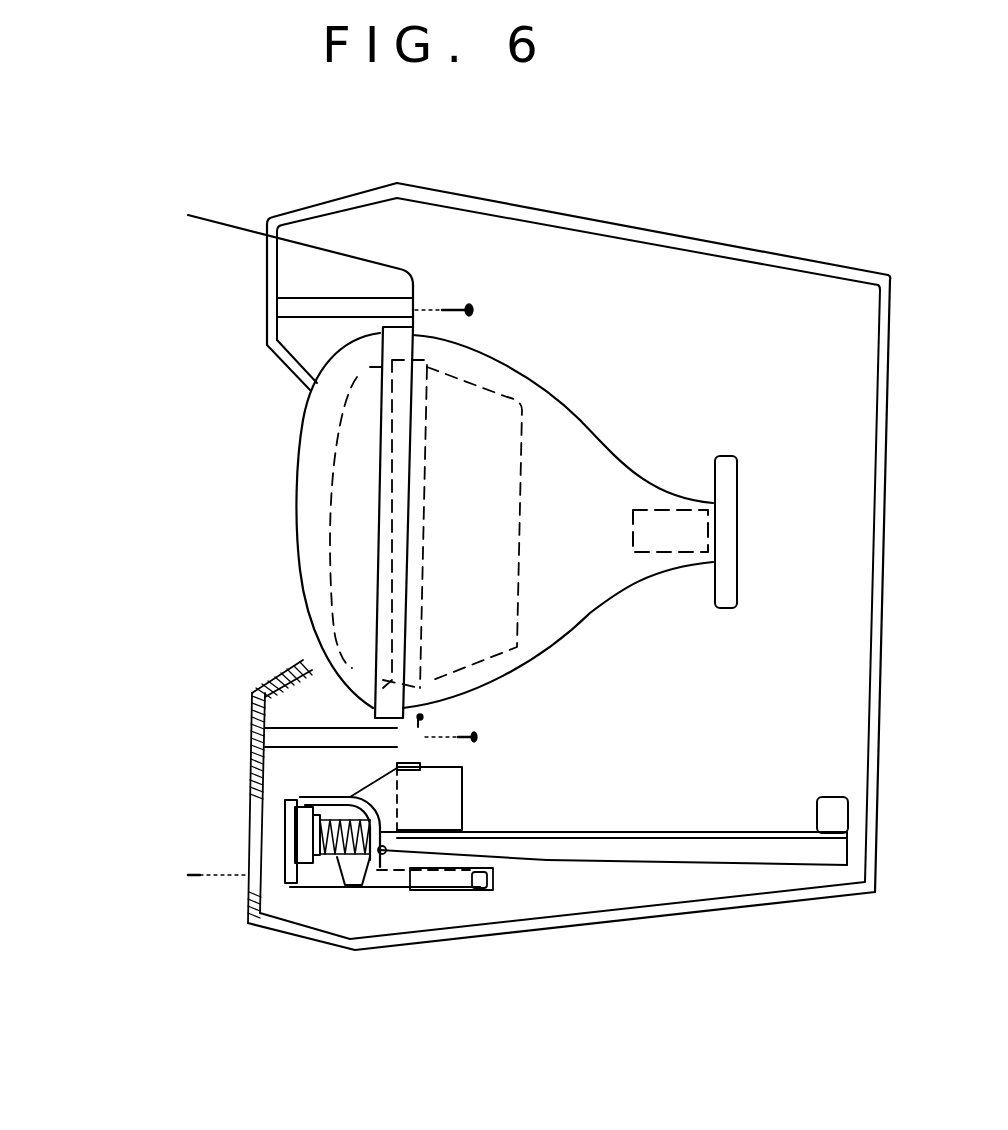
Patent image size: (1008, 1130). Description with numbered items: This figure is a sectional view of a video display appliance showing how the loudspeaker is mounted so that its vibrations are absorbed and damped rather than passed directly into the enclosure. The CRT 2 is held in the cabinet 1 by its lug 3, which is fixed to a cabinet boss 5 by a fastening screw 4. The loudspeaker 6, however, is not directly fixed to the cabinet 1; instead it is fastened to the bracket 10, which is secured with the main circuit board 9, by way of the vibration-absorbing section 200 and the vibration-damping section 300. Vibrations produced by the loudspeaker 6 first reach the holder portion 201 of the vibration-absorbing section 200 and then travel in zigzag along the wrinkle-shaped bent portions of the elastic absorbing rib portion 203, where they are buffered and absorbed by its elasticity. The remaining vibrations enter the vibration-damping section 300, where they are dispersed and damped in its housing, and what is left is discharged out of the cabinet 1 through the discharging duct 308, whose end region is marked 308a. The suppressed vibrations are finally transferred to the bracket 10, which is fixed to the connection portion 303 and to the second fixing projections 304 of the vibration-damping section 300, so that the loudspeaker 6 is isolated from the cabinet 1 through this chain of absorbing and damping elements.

The cabinet 1 is at (270, 330).
The CRT 2 is at (578, 452).
The lug 3 is at (277, 453).
The fastening screw 4 is at (475, 307).
The cabinet boss 5 is at (310, 307).
The loudspeaker 6 is at (300, 837).
The main circuit board 9 is at (663, 833).
The bracket 10 is at (663, 855).
The vibration-absorbing section 200 is at (340, 863).
The holder portion 201 is at (314, 797).
The elastic absorbing rib portion 203 is at (352, 828).
The vibration-damping section 300 is at (330, 893).
The connection portion 303 is at (438, 805).
The second fixing projections 304 is at (547, 862).
The discharging duct 308 is at (403, 892).
The stopper of guide member 308a is at (503, 900).